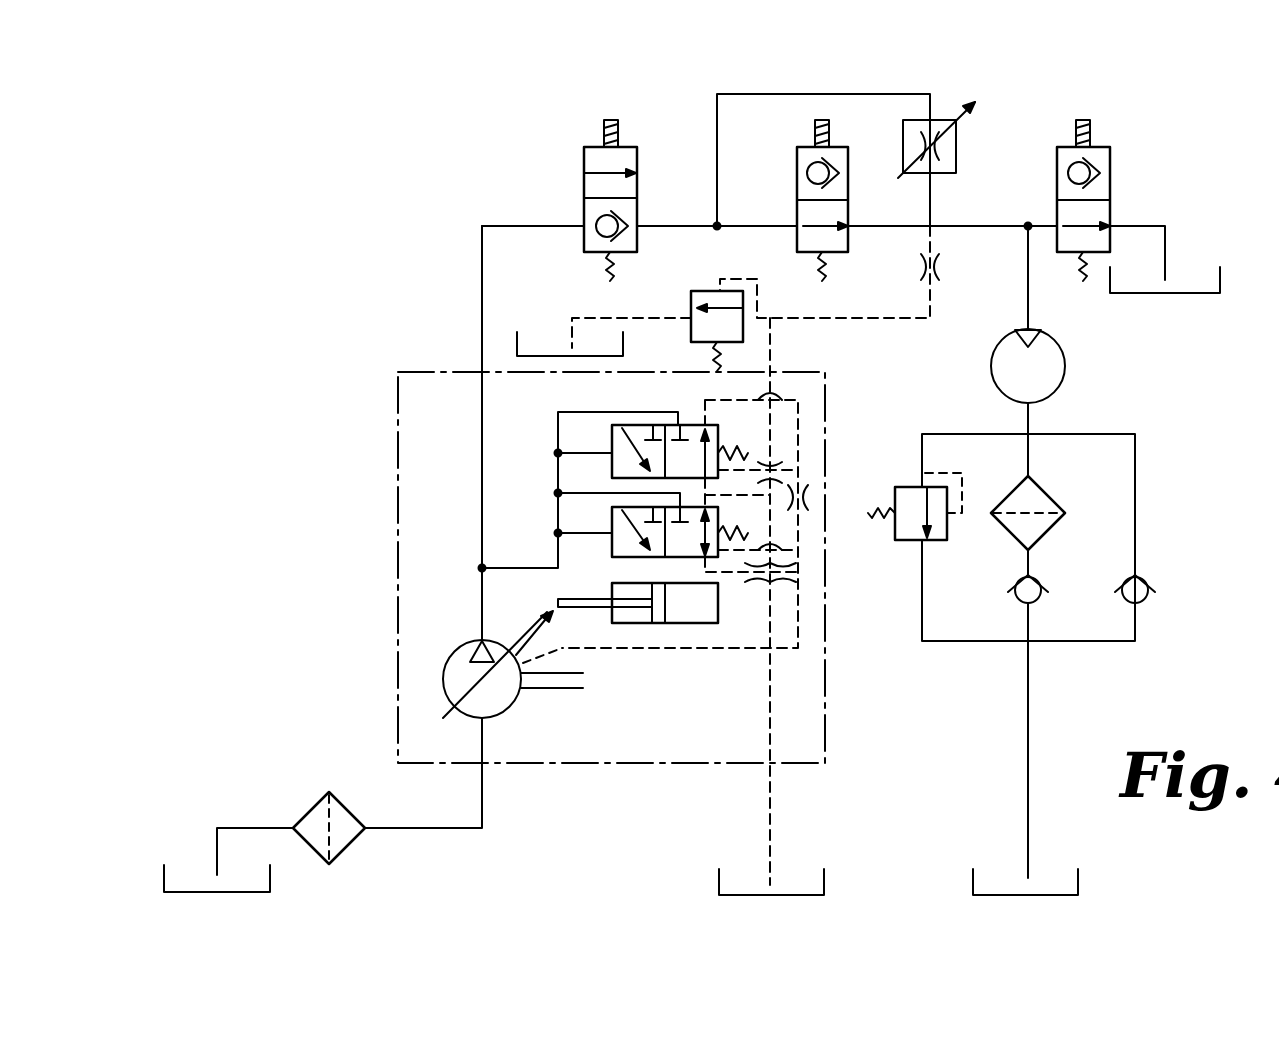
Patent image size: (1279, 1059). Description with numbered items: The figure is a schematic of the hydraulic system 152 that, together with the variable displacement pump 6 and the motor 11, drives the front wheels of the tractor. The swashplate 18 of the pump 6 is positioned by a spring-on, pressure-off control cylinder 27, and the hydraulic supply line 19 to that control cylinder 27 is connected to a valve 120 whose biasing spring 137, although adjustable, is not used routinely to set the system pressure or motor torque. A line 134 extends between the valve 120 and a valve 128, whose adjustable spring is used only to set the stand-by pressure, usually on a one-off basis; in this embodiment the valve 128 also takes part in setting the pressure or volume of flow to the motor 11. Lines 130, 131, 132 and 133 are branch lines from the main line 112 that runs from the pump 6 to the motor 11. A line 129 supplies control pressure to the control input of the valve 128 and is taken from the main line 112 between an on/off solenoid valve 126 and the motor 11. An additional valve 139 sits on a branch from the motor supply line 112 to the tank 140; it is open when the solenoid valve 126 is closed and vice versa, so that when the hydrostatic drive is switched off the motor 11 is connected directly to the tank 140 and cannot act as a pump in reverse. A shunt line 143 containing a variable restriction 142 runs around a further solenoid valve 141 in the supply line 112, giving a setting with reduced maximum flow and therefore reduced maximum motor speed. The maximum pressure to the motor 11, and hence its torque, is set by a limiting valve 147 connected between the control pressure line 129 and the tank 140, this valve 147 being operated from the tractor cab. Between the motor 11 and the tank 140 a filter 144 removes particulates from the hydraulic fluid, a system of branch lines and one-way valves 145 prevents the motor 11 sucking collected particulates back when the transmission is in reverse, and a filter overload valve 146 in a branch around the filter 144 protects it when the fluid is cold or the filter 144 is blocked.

The variable displacement pump 6 is at (520, 705).
The motor 11 is at (1066, 366).
The swashplate 18 is at (540, 621).
The hydraulic supply line 19 is at (705, 568).
The control cylinder 27 is at (690, 623).
The main line 112 is at (482, 462).
The valve 120 is at (612, 543).
The on/off solenoid valve 126 is at (584, 157).
The valve 128 is at (690, 425).
The line 129 is at (770, 341).
The line 130 is at (590, 533).
The line 131 is at (590, 453).
The line 132 is at (590, 493).
The line 133 is at (572, 412).
The line 134 is at (705, 486).
The biasing spring 137 is at (745, 533).
The valve 139 is at (1110, 158).
The tank 140 is at (270, 880).
The solenoid valve 141 is at (837, 147).
The variable restriction 142 is at (957, 141).
The shunt line 143 is at (717, 104).
The filter 144 is at (1045, 493).
The one-way valves 145 is at (1038, 598).
The filter overload valve 146 is at (908, 540).
The limiting valve 147 is at (706, 291).
The hydraulic system 152 is at (326, 394).